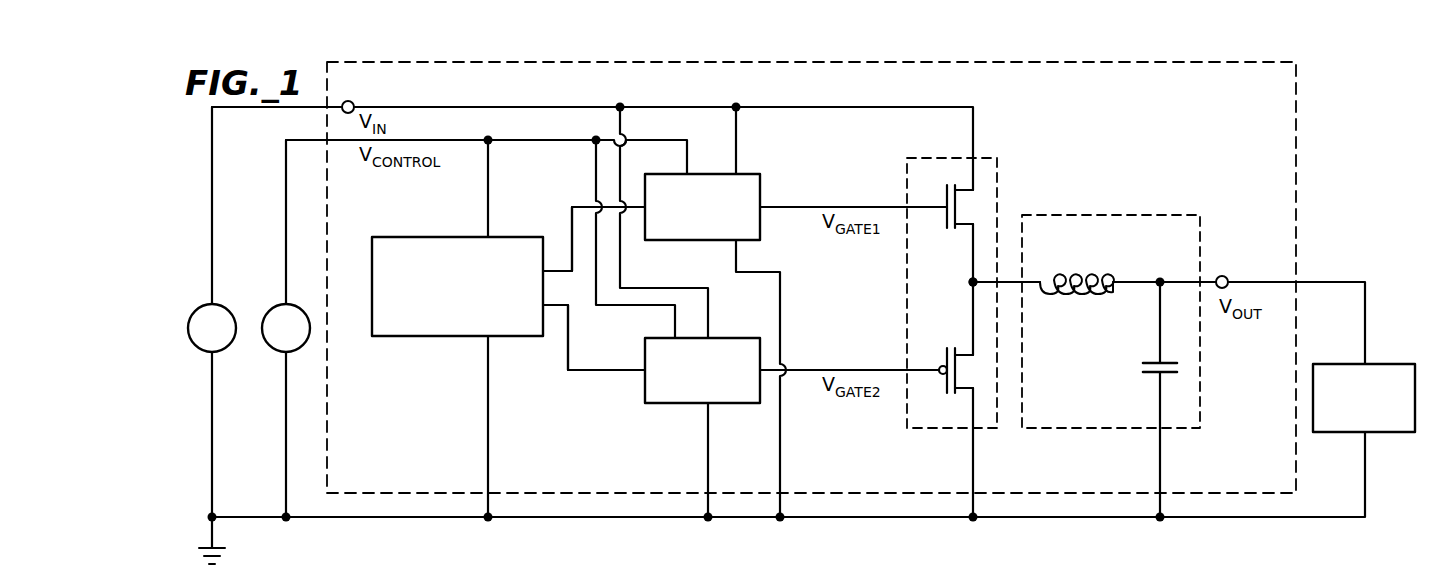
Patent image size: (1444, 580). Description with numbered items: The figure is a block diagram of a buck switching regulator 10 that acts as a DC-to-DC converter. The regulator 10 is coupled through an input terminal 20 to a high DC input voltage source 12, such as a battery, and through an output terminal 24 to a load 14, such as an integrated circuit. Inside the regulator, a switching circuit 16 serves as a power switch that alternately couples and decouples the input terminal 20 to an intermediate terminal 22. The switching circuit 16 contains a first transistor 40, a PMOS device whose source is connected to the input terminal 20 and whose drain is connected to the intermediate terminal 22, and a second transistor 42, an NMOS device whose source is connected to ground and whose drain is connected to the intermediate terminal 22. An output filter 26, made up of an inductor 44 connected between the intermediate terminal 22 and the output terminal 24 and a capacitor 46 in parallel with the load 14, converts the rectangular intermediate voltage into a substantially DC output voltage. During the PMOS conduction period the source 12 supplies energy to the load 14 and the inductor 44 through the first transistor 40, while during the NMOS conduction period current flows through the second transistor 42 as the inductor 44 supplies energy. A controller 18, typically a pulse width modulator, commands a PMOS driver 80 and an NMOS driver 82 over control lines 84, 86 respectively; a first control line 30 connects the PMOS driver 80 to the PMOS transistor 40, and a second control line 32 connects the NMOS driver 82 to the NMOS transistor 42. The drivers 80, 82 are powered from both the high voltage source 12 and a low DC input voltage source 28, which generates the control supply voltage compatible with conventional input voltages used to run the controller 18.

The switching regulator 10 is at (1297, 103).
The high DC input voltage source 12 is at (217, 352).
The load 14 is at (1375, 432).
The switching circuit 16 is at (997, 187).
The controller 18 is at (457, 237).
The input terminal 20 is at (350, 101).
The intermediate terminal 22 is at (973, 282).
The output terminal 24 is at (1222, 276).
The output filter 26 is at (1098, 215).
The low DC input voltage source 28 is at (283, 305).
The first control line 30 is at (800, 207).
The second control line 32 is at (800, 370).
The first transistor 40 is at (947, 197).
The second transistor 42 is at (947, 360).
The inductor 44 is at (1085, 281).
The capacitor 46 is at (1152, 373).
The PMOS driver 80 is at (749, 174).
The NMOS driver 82 is at (665, 403).
The control line 84 is at (572, 244).
The control line 86 is at (568, 337).